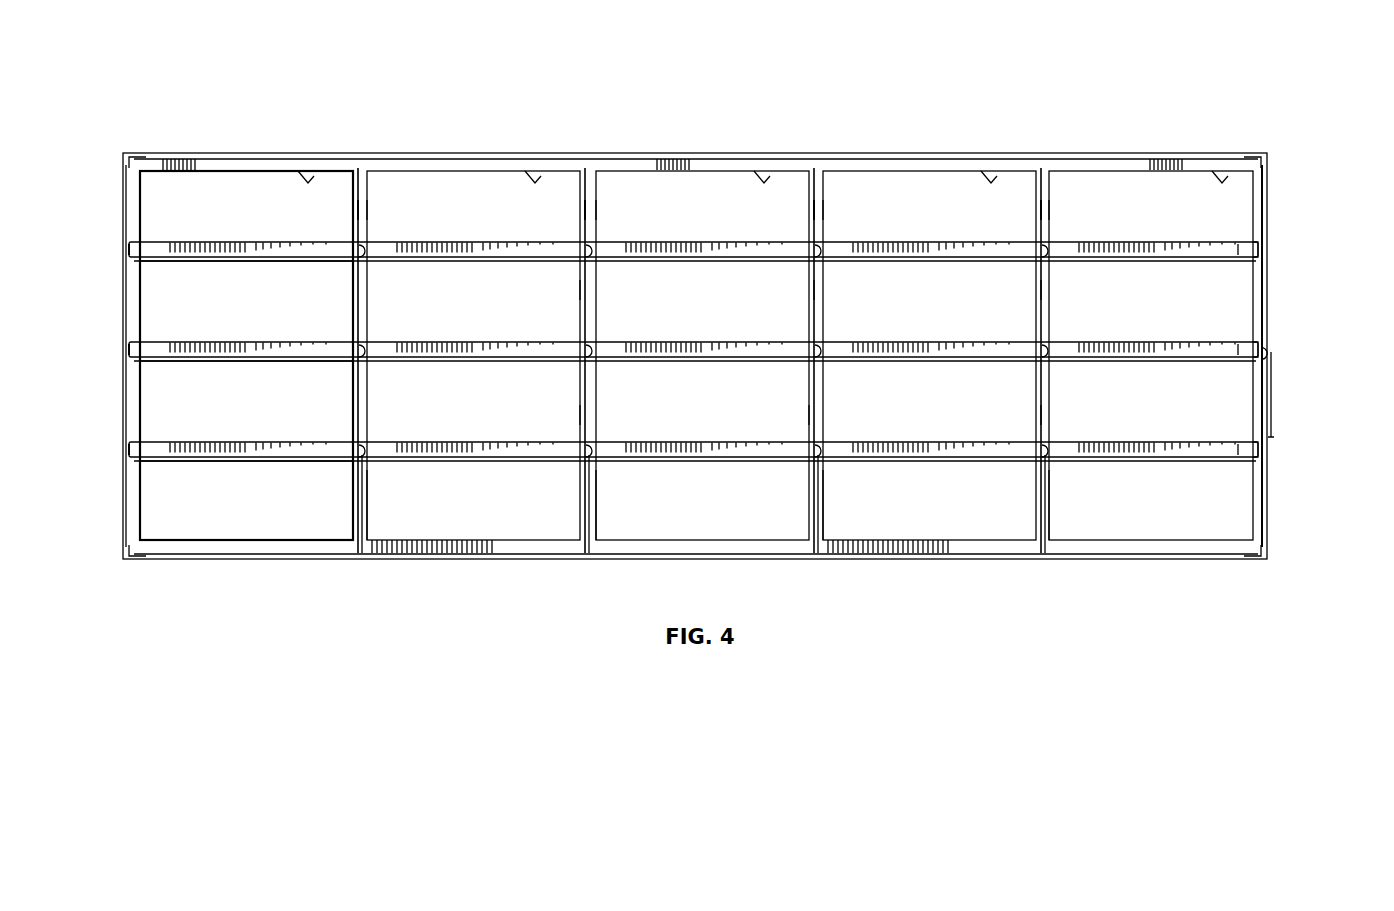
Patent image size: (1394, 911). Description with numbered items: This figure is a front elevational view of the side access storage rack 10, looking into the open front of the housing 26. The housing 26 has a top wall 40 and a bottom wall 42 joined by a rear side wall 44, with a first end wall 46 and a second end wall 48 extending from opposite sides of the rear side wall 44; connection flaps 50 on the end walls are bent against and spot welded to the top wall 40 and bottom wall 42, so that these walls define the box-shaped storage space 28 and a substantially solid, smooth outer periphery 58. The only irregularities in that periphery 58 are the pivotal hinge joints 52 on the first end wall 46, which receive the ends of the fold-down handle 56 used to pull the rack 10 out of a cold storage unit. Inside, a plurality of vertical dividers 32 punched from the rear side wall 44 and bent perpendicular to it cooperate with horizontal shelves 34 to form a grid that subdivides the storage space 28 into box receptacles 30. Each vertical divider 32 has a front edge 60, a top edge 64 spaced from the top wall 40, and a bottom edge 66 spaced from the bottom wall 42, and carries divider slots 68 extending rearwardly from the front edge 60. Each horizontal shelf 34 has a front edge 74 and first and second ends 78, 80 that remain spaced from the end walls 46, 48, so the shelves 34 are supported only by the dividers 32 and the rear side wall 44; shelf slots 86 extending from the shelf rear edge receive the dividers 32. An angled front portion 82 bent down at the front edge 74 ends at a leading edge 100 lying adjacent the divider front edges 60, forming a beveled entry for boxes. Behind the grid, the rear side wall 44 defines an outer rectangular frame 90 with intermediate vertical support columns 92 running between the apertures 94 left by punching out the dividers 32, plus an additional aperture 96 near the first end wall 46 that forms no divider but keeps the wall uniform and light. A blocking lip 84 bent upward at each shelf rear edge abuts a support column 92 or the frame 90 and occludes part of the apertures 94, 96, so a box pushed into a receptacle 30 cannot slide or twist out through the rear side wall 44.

The side access storage rack 10 is at (146, 116).
The housing 26 is at (1128, 152).
The storage space 28 is at (234, 530).
The box receptacle 30 is at (732, 355).
The vertical divider 32 is at (354, 211).
The horizontal shelf 34 is at (136, 240).
The top wall 40 is at (680, 160).
The bottom wall 42 is at (923, 558).
The rear side wall 44 is at (722, 161).
The first end wall 46 is at (1268, 512).
The second end wall 48 is at (122, 492).
The connection flap 50 is at (130, 160).
The pivotal hinge joint 52 is at (1270, 353).
The fold-down handle 56 is at (1274, 400).
The outer periphery 58 is at (1265, 560).
The front edge 60 is at (369, 501).
The top edge 64 is at (358, 169).
The bottom edge 66 is at (362, 553).
The divider slot 68 is at (353, 289).
The front edge 74 is at (198, 250).
The first end 78 is at (1260, 247).
The second end 80 is at (130, 246).
The angled front portion 82 is at (133, 259).
The blocking lip 84 is at (1238, 245).
The shelf slot 86 is at (821, 251).
The outer rectangular frame 90 is at (199, 165).
The vertical support column 92 is at (369, 210).
The aperture 94 is at (309, 174).
The additional aperture 96 is at (1223, 174).
The leading edge 100 is at (220, 262).